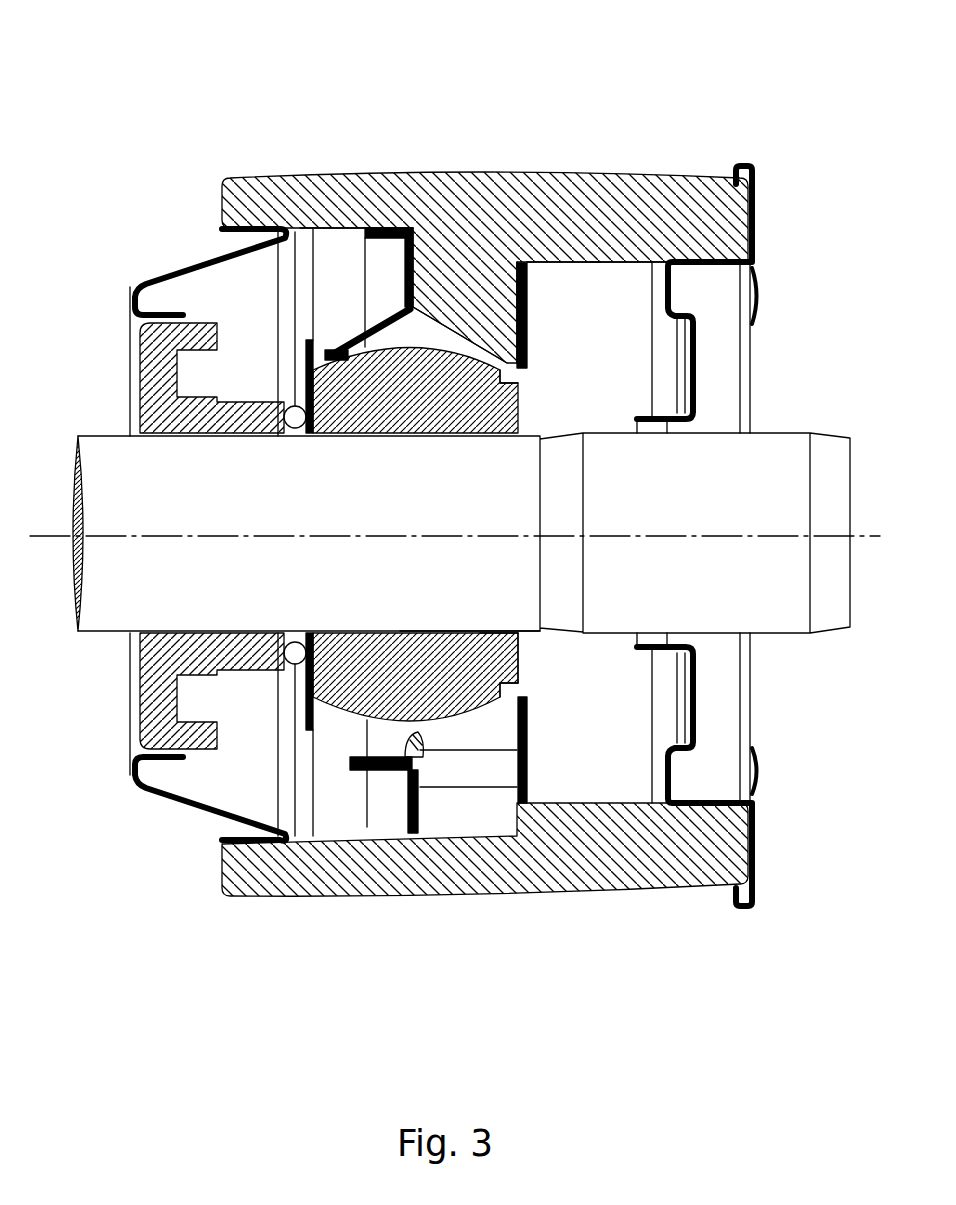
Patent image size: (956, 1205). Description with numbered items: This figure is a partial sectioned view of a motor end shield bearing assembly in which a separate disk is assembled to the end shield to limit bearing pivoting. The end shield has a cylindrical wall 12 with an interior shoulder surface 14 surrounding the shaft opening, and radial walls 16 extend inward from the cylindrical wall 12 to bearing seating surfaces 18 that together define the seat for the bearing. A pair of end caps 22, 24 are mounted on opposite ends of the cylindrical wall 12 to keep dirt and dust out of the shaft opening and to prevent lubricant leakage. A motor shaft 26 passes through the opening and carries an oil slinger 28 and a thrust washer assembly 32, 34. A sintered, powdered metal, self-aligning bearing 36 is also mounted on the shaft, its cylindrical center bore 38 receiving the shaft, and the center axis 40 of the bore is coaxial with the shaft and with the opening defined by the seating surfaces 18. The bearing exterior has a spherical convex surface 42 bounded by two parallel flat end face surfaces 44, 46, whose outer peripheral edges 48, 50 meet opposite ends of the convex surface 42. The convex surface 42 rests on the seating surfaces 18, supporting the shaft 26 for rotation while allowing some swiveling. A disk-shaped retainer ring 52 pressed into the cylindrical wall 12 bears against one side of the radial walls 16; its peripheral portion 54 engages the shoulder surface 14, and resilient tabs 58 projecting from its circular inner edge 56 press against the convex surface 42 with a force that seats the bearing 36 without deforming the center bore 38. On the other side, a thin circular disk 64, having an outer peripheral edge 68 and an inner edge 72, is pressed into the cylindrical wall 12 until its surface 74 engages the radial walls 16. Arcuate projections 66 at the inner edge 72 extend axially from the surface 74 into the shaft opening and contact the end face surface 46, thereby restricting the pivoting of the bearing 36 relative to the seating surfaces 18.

The cylindrical wall 12 is at (493, 176).
The interior shoulder surface 14 is at (343, 230).
The radial walls 16 is at (526, 320).
The bearing seating surface 18 is at (460, 352).
The end cap 22 is at (178, 267).
The end cap 24 is at (752, 218).
The motor shaft 26 is at (104, 452).
The oil slinger 28 is at (140, 358).
The thrust washer assembly 32 is at (297, 650).
The thrust washer assembly 34 is at (313, 697).
The self-aligning bearing 36 is at (455, 722).
The center bore 38 is at (468, 625).
The center axis 40 is at (47, 538).
The convex surface 42 is at (390, 720).
The end face surface 44 is at (305, 388).
The end face surface 46 is at (520, 652).
The outer peripheral edge 48 is at (310, 700).
The outer peripheral edge 50 is at (520, 705).
The retainer ring 52 is at (380, 260).
The peripheral portion 54 is at (409, 262).
The inner edge 56 is at (417, 312).
The resilient tabs 58 is at (342, 343).
The circular disk 64 is at (527, 360).
The projections 66 is at (527, 390).
The outer peripheral edge 68 is at (528, 265).
The inner edge 72 is at (520, 680).
The disk surface 74 is at (508, 727).